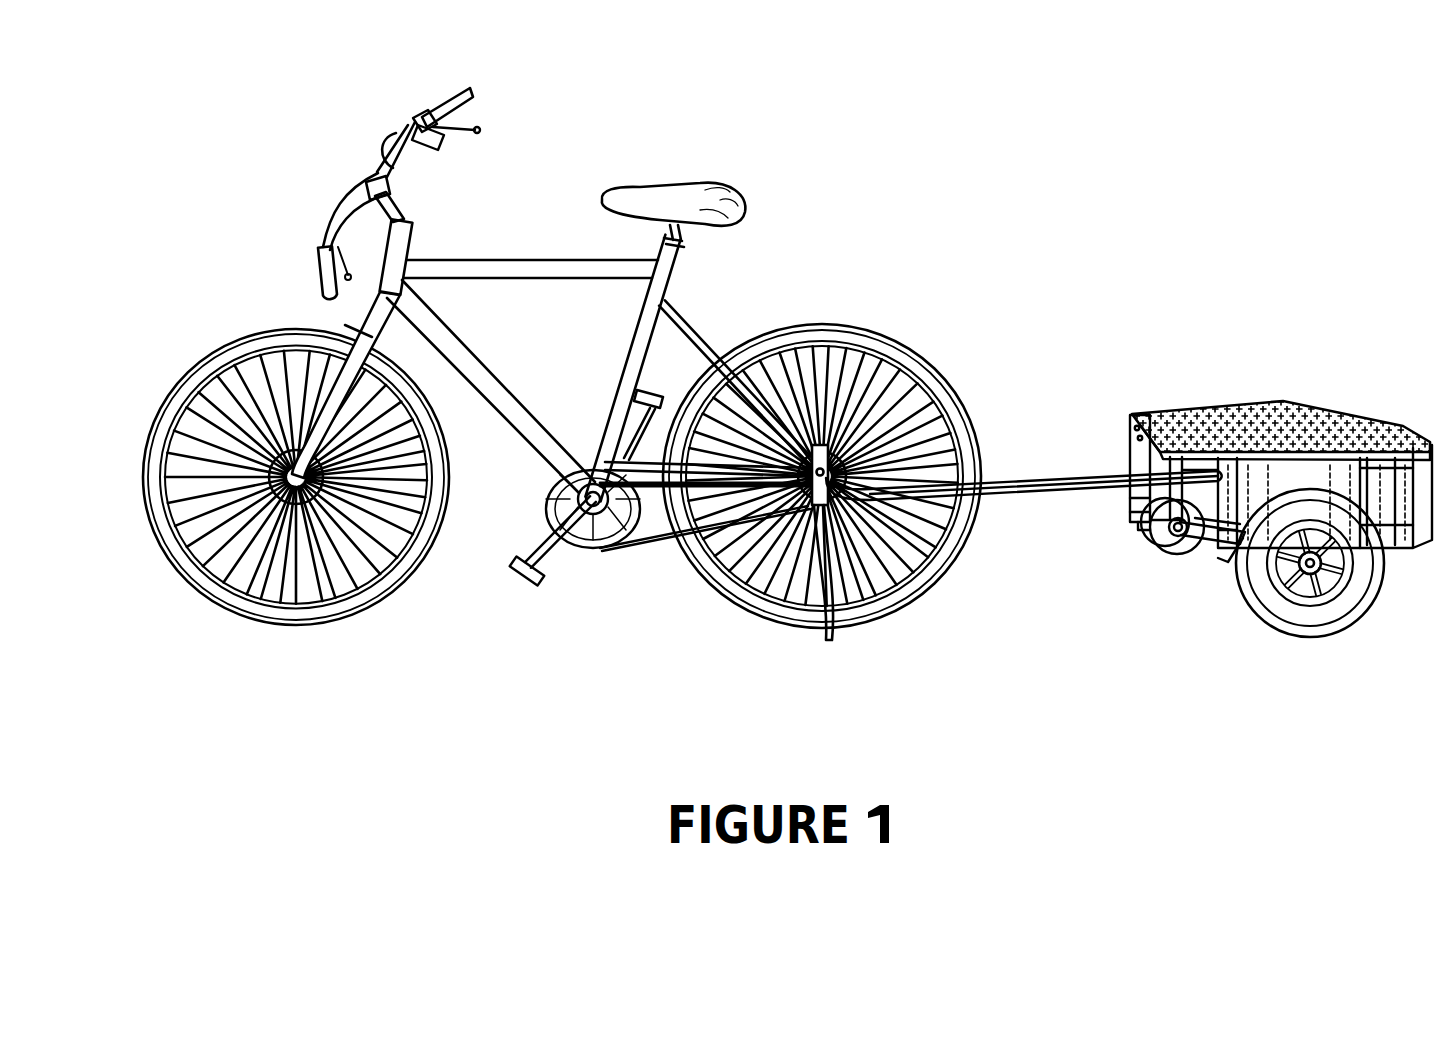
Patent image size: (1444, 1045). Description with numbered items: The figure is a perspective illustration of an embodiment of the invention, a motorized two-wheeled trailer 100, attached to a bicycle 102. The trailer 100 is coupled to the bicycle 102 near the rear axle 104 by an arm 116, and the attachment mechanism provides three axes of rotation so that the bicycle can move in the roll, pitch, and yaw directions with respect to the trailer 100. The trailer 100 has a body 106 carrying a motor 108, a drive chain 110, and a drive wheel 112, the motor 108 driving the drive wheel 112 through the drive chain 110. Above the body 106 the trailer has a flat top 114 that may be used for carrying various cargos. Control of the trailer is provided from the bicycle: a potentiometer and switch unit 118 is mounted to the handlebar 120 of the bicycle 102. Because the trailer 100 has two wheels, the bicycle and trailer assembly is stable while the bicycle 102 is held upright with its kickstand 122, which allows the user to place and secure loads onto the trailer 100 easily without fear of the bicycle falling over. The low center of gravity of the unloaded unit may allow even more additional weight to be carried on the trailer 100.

The trailer 100 is at (1252, 513).
The bicycle 102 is at (646, 188).
The rear axle 104 is at (928, 392).
The body 106 is at (1398, 512).
The motor 108 is at (1157, 547).
The drive chain 110 is at (1212, 548).
The drive wheel 112 is at (1312, 638).
The flat top 114 is at (1335, 430).
The arm 116 is at (1022, 500).
The potentiometer and switch unit 118 is at (443, 150).
The handlebar 120 is at (400, 128).
The kickstand 122 is at (808, 545).